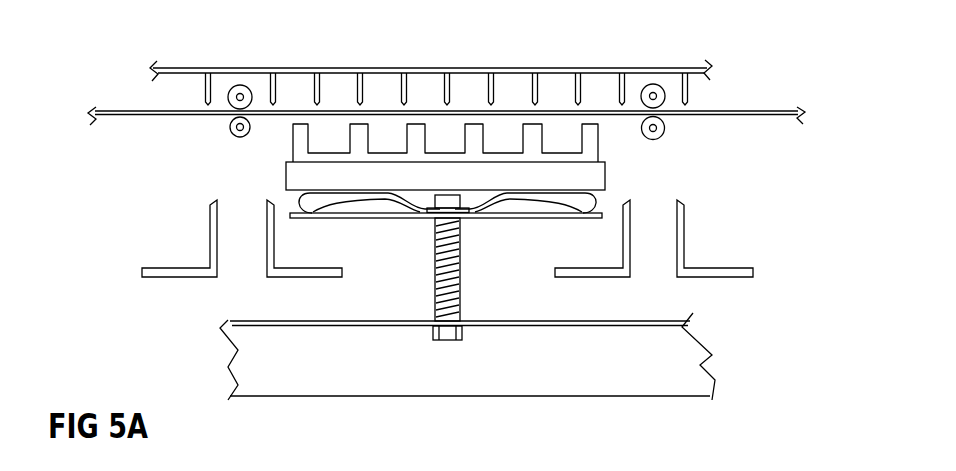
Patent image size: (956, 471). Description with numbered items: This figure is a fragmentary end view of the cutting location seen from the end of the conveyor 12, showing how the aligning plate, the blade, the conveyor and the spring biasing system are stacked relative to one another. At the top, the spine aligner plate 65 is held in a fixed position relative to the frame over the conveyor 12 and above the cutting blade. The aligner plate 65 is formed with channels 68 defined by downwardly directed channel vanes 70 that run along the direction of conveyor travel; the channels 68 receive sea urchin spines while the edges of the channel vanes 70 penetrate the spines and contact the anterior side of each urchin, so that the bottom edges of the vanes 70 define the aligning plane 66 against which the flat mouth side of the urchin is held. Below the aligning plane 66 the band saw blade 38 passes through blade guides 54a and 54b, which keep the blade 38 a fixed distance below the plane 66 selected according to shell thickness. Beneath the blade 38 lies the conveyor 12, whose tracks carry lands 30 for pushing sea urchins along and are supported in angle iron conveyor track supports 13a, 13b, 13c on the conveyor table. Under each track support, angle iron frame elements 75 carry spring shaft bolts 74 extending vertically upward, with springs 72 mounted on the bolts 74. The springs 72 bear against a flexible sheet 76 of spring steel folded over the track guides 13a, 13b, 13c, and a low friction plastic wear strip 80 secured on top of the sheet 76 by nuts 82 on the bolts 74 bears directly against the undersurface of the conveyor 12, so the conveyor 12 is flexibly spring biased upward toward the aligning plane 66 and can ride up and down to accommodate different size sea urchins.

The conveyor 12 is at (606, 182).
The angle iron conveyor track support 13a is at (181, 267).
The angle iron conveyor track support 13b is at (328, 267).
The angle iron conveyor track support 13c is at (698, 267).
The lands 30 is at (620, 131).
The band saw blade 38 is at (115, 110).
The blade guide 54a is at (665, 98).
The blade guide 54b is at (228, 98).
The spine aligner plate 65 is at (247, 72).
The aligning plane 66 is at (316, 105).
The channels 68 is at (335, 84).
The channel vanes 70 is at (580, 90).
The springs 72 is at (454, 295).
The spring shaft bolts 74 is at (447, 340).
The angle iron frame elements 75 is at (587, 375).
The flexible sheet 76 is at (368, 217).
The wear strips 80 is at (391, 200).
The nuts 82 is at (459, 212).